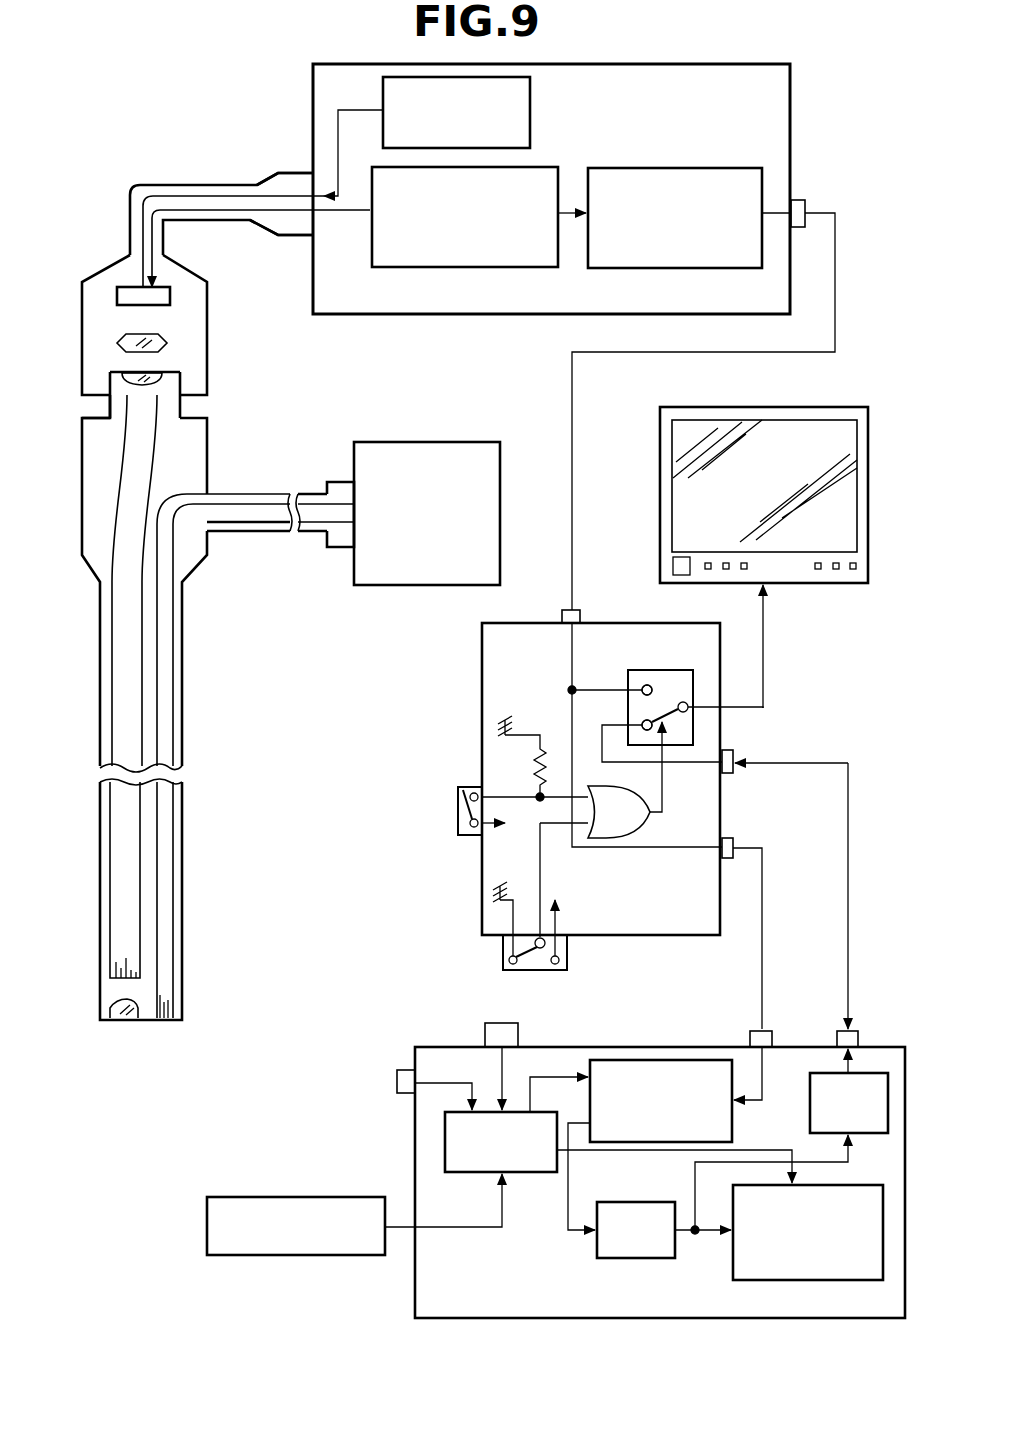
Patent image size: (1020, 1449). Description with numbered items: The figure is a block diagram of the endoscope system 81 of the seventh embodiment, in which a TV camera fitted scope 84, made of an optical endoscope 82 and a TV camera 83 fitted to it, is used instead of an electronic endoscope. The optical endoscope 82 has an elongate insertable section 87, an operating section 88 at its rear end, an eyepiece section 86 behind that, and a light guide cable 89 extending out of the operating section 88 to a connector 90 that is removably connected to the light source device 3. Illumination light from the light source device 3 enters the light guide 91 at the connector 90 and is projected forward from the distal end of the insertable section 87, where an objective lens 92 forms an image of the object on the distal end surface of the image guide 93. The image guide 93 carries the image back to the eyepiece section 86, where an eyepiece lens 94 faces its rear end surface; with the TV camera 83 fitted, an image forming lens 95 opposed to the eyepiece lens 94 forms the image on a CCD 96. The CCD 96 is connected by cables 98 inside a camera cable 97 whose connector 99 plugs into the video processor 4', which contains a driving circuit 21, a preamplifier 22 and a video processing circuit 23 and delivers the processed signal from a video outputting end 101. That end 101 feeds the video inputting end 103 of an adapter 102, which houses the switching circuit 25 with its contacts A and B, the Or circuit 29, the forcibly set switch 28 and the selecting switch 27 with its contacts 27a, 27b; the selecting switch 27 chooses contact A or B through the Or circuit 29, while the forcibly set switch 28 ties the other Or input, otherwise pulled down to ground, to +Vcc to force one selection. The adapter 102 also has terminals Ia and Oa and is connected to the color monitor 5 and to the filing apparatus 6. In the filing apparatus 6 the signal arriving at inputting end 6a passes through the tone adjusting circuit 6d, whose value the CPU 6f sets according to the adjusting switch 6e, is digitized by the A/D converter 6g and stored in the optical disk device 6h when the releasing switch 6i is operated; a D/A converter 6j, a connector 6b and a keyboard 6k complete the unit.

The video processor 4' is at (551, 165).
The endoscope system 81 is at (590, 305).
The driving circuit 21 is at (530, 108).
The preamplifier 22 is at (497, 268).
The video processing circuit 23 is at (700, 268).
The video outputting end 101 is at (806, 200).
The connector 99 is at (283, 172).
The camera cable 97 is at (168, 185).
The cables 98 is at (231, 210).
The CCD 96 is at (127, 287).
The image forming lens 95 is at (117, 343).
The eyepiece lens 94 is at (122, 376).
The eyepiece section 86 is at (110, 412).
The TV camera 83 is at (222, 343).
The optical endoscope 82 is at (218, 434).
The TV camera fitted scope 84 is at (215, 344).
The operating section 88 is at (82, 512).
The light guide cable 89 is at (265, 532).
The insertable section 87 is at (183, 678).
The light guide 91 is at (183, 727).
The image guide 93 is at (118, 838).
The objective lens 92 is at (112, 1003).
The connector 90 is at (338, 482).
The light source device 3 is at (455, 442).
The color monitor 5 is at (815, 407).
The video inputting end 103 is at (580, 614).
The adapter 102 is at (619, 790).
The contact A is at (644, 685).
The contact B is at (641, 722).
The switching circuit 25 is at (686, 670).
The forcibly set switch 28 is at (458, 806).
The Or circuit 29 is at (652, 814).
The input terminal Ia is at (735, 755).
The output terminal Oa is at (735, 842).
The switch contact 27a is at (503, 955).
The switch contact 27b is at (567, 955).
The selecting switch 27 is at (541, 972).
The adjusting switch 6e is at (500, 1023).
The inputting end 6a is at (772, 1033).
The output connector 6b is at (860, 1035).
The releasing switch 6i is at (397, 1080).
The filing apparatus 6 is at (619, 1040).
The D/A converter 6j is at (810, 1082).
The keyboard 6k is at (297, 1197).
The tone adjusting circuit 6d is at (732, 1122).
The CPU 6f is at (532, 1172).
The A/D converter 6g is at (630, 1202).
The optical disk device 6h is at (733, 1262).